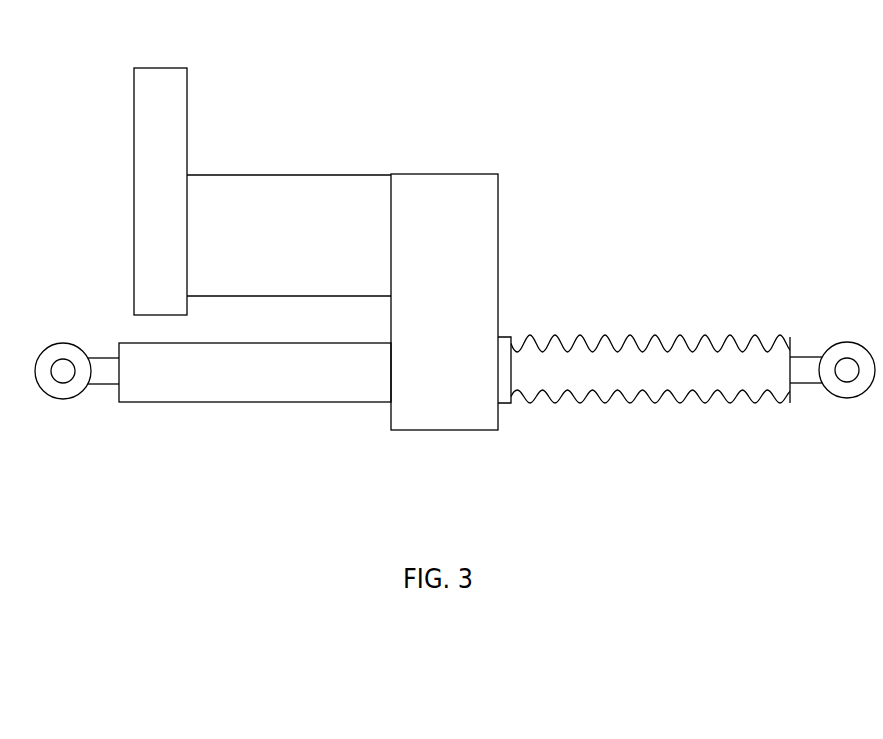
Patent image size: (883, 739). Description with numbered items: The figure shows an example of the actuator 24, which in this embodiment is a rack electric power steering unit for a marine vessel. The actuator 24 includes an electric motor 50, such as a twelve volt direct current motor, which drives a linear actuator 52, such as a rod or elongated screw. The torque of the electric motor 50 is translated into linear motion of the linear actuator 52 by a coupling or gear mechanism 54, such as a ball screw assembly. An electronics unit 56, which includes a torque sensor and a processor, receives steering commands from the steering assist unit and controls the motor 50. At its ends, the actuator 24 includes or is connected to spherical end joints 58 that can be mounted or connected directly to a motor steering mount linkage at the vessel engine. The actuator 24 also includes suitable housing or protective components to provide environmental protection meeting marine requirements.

The actuator 24 is at (619, 128).
The electric motor 50 is at (283, 183).
The linear actuator 52 is at (605, 380).
The coupling or gear mechanism 54 is at (488, 248).
The electronics unit 56 is at (143, 190).
The spherical end joints 58 is at (50, 385).